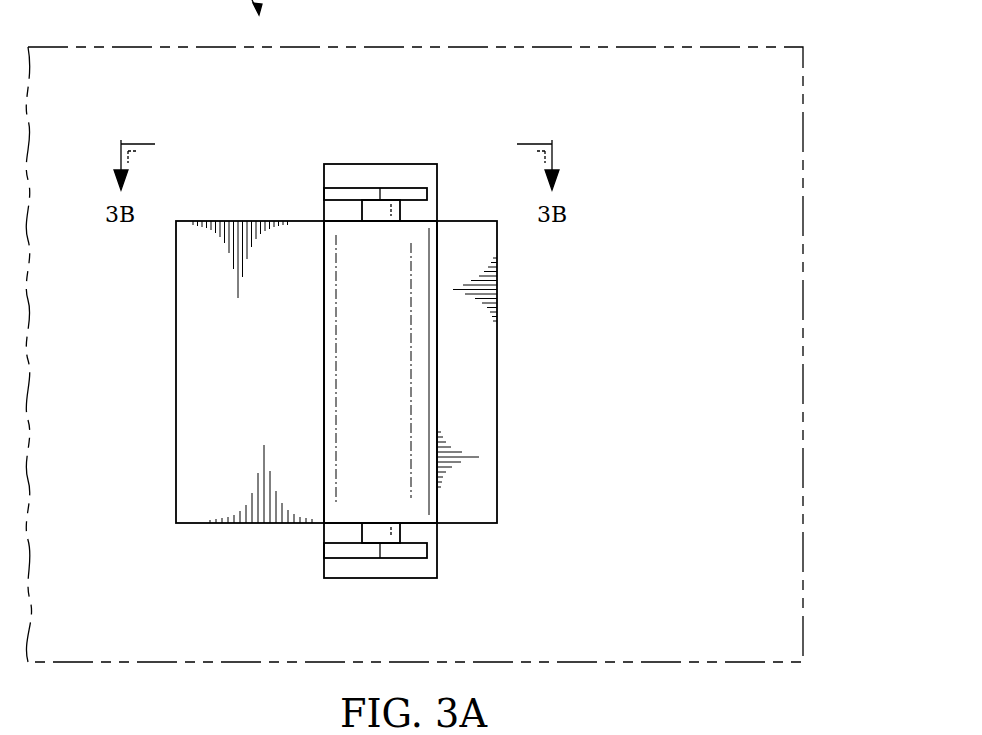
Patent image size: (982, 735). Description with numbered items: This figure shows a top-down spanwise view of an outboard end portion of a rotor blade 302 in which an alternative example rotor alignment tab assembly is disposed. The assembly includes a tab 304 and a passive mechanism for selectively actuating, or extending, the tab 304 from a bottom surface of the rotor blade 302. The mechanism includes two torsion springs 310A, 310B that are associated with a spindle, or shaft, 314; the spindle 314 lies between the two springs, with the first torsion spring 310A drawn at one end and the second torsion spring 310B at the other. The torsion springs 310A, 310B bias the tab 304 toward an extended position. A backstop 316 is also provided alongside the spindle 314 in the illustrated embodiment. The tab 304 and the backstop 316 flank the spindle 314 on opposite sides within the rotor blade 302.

The rotor blade 302 is at (822, 232).
The tab 304 is at (186, 422).
The torsion spring 310A is at (407, 188).
The torsion spring 310B is at (407, 558).
The spindle 314 is at (325, 370).
The backstop 316 is at (487, 403).